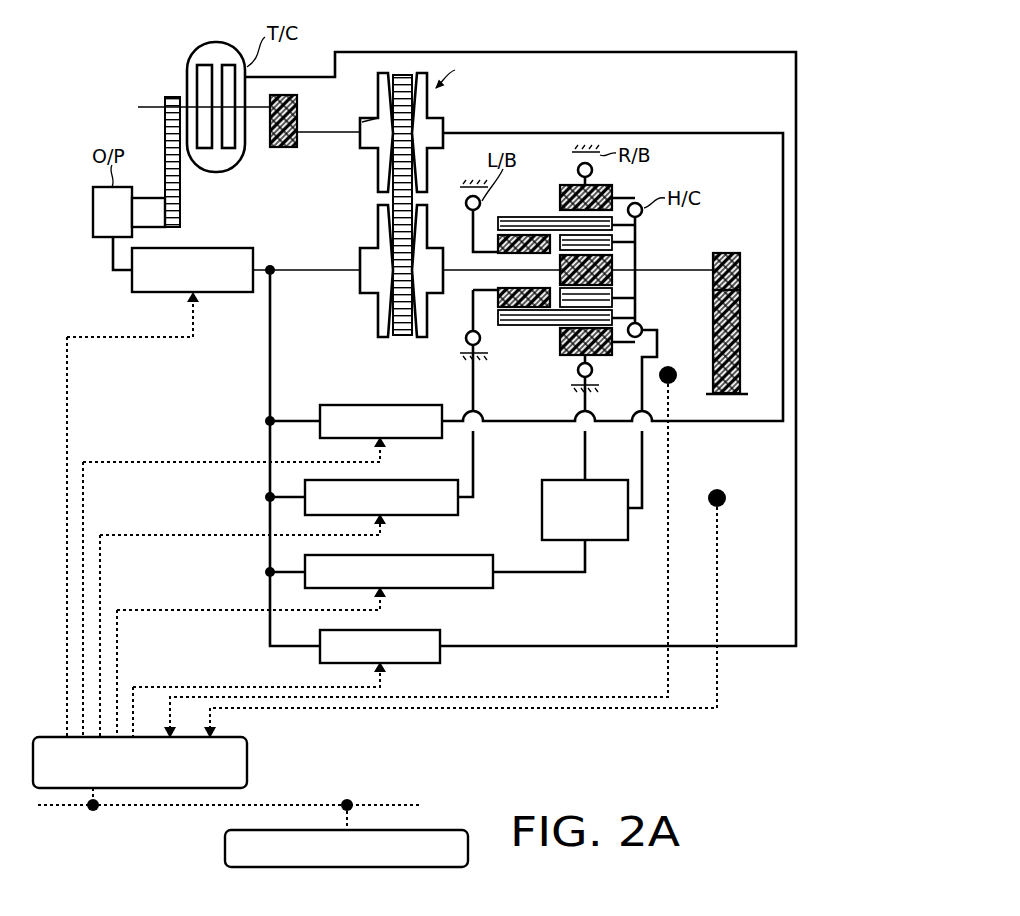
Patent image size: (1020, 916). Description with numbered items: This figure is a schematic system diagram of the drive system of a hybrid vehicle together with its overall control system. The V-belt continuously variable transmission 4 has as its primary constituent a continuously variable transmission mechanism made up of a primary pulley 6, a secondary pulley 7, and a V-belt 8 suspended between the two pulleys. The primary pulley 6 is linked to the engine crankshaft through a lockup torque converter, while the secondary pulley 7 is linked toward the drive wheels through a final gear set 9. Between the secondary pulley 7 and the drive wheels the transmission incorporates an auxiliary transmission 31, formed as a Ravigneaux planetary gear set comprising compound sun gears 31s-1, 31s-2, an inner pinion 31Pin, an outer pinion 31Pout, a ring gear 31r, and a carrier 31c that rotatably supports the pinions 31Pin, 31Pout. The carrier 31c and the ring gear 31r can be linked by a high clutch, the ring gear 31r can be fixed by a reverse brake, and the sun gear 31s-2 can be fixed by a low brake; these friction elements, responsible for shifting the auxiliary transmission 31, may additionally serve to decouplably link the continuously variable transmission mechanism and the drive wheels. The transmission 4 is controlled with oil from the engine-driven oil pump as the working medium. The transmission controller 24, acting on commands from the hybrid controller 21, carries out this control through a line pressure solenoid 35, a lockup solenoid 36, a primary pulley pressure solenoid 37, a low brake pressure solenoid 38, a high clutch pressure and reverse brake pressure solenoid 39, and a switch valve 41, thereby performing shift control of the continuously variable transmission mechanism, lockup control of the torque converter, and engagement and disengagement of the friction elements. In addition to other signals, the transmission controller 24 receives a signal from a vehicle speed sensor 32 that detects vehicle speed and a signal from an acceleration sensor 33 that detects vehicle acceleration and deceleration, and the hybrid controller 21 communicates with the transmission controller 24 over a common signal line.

The V-belt continuously variable transmission 4 is at (712, 34).
The primary pulley 6 is at (438, 115).
The secondary pulley 7 is at (358, 280).
The V-belt 8 is at (378, 191).
The final gear set 9 is at (740, 275).
The hybrid controller 21 is at (225, 848).
The transmission controller 24 is at (247, 760).
The auxiliary transmission 31 is at (532, 205).
The ring gear 31r is at (612, 194).
The carrier 31c is at (636, 290).
The sun gear 31s-1 is at (613, 262).
The sun gear 31s-2 is at (497, 293).
The inner pinion 31Pin is at (613, 228).
The outer pinion 31Pout is at (522, 327).
The vehicle speed sensor 32 is at (670, 367).
The acceleration sensor 33 is at (727, 498).
The line pressure solenoid 35 is at (243, 247).
The lockup solenoid 36 is at (437, 630).
The primary pulley pressure solenoid 37 is at (400, 405).
The low brake pressure solenoid 38 is at (440, 480).
The high clutch pressure & reverse brake pressure solenoid 39 is at (483, 555).
The switch valve 41 is at (550, 480).